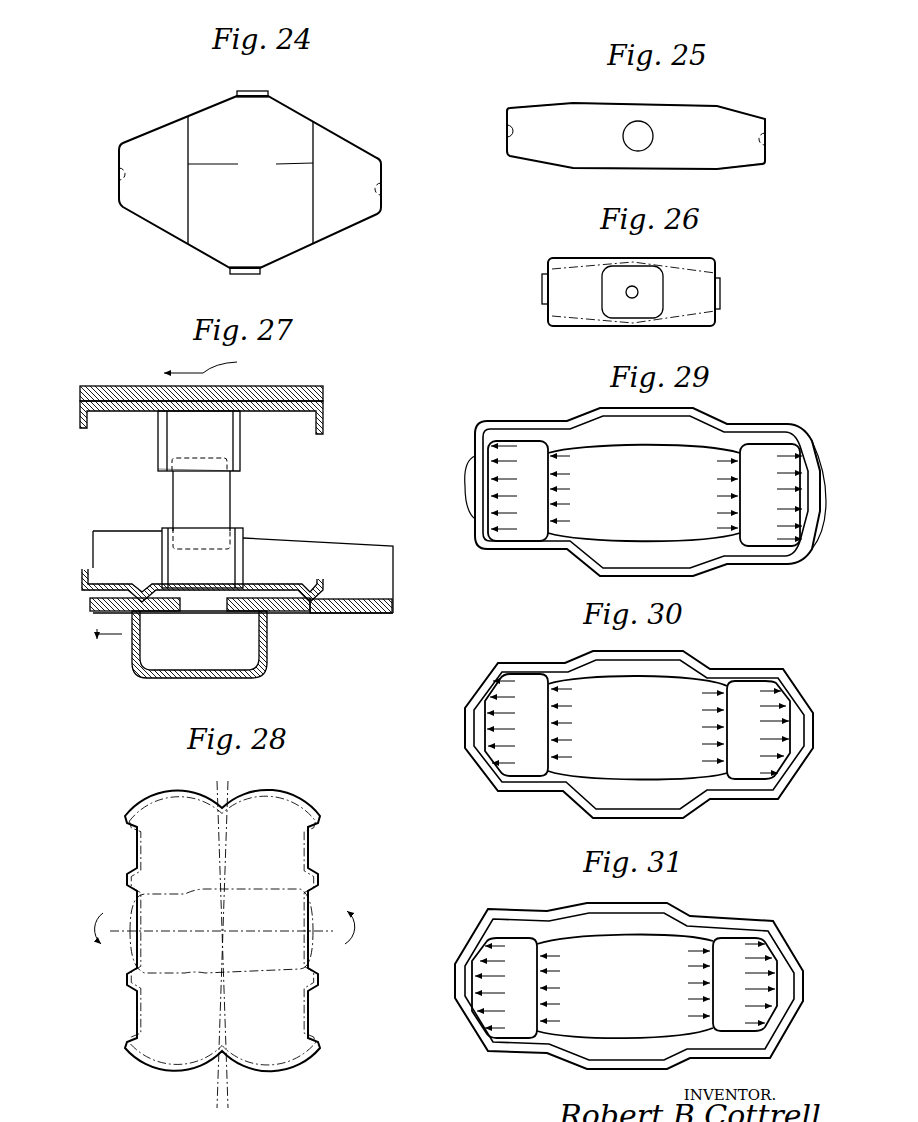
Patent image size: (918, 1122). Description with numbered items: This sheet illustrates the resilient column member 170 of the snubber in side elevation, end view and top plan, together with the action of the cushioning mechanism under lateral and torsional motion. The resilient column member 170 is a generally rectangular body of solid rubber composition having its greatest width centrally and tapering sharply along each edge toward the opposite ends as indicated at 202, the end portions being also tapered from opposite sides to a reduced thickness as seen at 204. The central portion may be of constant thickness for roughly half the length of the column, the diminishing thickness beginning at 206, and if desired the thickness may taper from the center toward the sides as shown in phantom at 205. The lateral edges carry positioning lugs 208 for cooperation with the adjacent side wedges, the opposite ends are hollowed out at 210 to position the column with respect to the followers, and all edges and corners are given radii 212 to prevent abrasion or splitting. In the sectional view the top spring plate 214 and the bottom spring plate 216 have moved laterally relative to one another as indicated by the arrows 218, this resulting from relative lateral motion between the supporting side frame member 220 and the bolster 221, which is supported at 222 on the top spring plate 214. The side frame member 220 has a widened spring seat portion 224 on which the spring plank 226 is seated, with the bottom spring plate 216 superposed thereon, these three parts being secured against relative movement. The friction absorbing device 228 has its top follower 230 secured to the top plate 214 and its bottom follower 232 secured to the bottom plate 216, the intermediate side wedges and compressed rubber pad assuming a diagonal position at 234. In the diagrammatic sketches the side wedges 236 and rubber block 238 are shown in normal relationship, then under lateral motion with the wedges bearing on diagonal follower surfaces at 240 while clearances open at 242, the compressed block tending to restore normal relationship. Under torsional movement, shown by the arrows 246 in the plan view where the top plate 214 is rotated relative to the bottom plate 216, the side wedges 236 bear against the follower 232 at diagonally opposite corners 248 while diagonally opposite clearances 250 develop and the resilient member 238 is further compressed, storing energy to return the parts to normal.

In FIG. 24, the resilient column member 170 is at (362, 227).
In FIG. 25, the resilient column member 170 is at (738, 172).
In FIG. 26, the resilient column member 170 is at (711, 260).
In FIG. 24, the tapered edges 202 is at (173, 121).
In FIG. 26, the tapered edges 202 is at (633, 292).
In FIG. 25, the tapered end portions 204 is at (550, 102).
In FIG. 26, the tapered end portions 204 is at (632, 262).
In FIG. 26, the thickness taper 205 is at (678, 270).
In FIG. 24, the beginning of diminishing thickness 206 is at (250, 164).
In FIG. 25, the beginning of diminishing thickness 206 is at (573, 167).
In FIG. 24, the lugs 208 is at (265, 90).
In FIG. 25, the lugs 208 is at (648, 136).
In FIG. 26, the lugs 208 is at (545, 288).
In FIG. 24, the hollowed-out ends 210 is at (119, 173).
In FIG. 25, the hollowed-out ends 210 is at (512, 130).
In FIG. 25, the radii 212 is at (512, 108).
In FIG. 26, the radii 212 is at (550, 260).
In FIG. 27, the top spring plate 214 is at (190, 428).
In FIG. 28, the top spring plate 214 is at (322, 818).
In FIG. 27, the bottom spring plate 216 is at (84, 581).
In FIG. 28, the bottom spring plate 216 is at (313, 1037).
In FIG. 27, the arrows 218 is at (173, 510).
In FIG. 27, the side frame member 220 is at (150, 672).
In FIG. 27, the bolster 221 is at (318, 397).
In FIG. 27, the bolster support 222 is at (220, 398).
In FIG. 27, the spring seat portion 224 is at (274, 615).
In FIG. 27, the spring plank 226 is at (366, 607).
In FIG. 27, the friction absorbing device 228 is at (244, 474).
In FIG. 27, the top follower 230 is at (180, 442).
In FIG. 28, the top follower 230 is at (168, 892).
In FIG. 27, the bottom follower 232 is at (228, 557).
In FIG. 28, the bottom follower 232 is at (172, 969).
In FIG. 29, the bottom follower 232 is at (492, 445).
In FIG. 30, the bottom follower 232 is at (774, 800).
In FIG. 31, the bottom follower 232 is at (670, 907).
In FIG. 27, the diagonal position 234 is at (181, 493).
In FIG. 29, the side wedges 236 is at (765, 460).
In FIG. 30, the side wedges 236 is at (530, 687).
In FIG. 31, the side wedges 236 is at (735, 947).
In FIG. 29, the rubber block 238 is at (600, 460).
In FIG. 30, the rubber block 238 is at (580, 763).
In FIG. 31, the rubber block 238 is at (605, 958).
In FIG. 29, the bearing surfaces under lateral motion 240 is at (473, 460).
In FIG. 30, the bearing surfaces under lateral motion 240 is at (487, 683).
In FIG. 30, the clearances under lateral motion 242 is at (485, 763).
In FIG. 28, the arrows 246 is at (102, 916).
In FIG. 31, the corner bearing points 248 is at (467, 1003).
In FIG. 31, the diagonally opposite clearances 250 is at (483, 934).